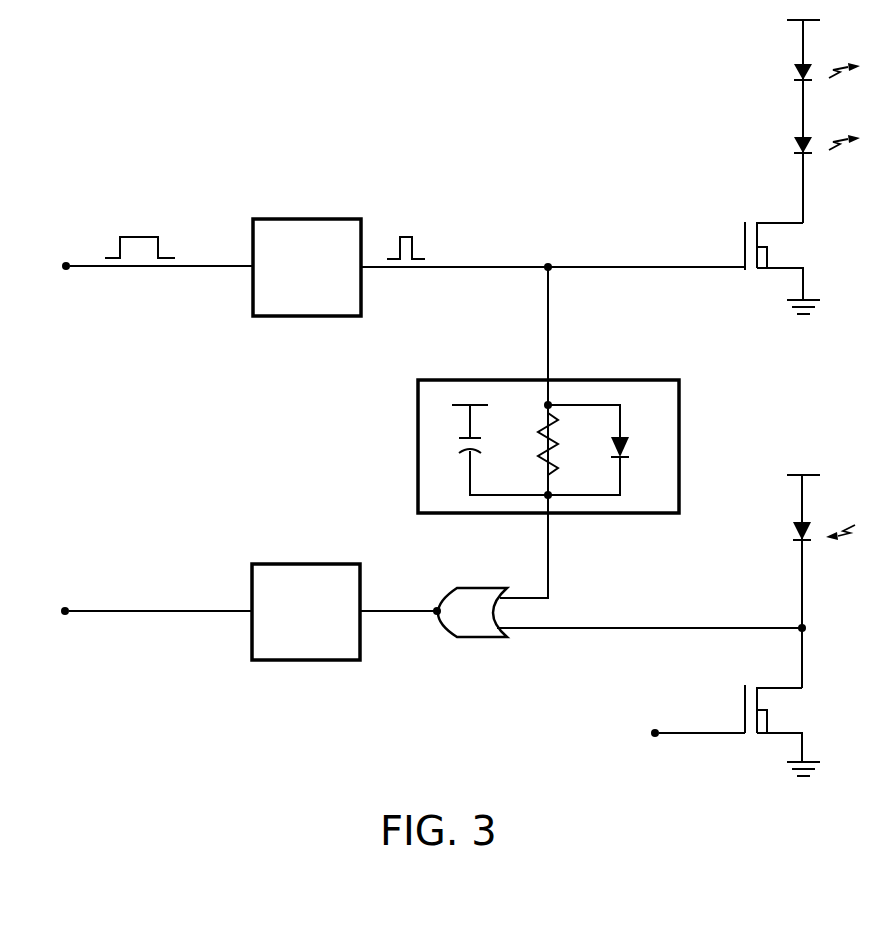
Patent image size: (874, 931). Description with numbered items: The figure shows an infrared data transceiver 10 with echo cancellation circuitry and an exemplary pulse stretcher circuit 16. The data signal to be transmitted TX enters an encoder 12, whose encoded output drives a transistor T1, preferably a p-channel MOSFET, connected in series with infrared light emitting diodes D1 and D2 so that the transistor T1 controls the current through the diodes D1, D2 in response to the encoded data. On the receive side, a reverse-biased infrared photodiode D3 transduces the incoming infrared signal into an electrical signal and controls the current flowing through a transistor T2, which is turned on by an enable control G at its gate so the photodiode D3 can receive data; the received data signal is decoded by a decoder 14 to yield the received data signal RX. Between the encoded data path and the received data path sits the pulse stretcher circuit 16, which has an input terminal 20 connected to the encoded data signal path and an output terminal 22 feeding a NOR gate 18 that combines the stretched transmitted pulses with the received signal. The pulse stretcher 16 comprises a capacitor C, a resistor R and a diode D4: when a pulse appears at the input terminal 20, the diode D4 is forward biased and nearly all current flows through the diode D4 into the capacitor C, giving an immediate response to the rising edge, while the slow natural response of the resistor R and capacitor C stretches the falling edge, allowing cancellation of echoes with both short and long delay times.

The infrared data transceiver system 10 is at (260, 700).
The encoder 12 is at (312, 218).
The decoder 14 is at (300, 563).
The pulse stretcher circuit 16 is at (508, 378).
The NOR gate 18 is at (487, 640).
The input terminal 20 is at (550, 354).
The output terminal 22 is at (548, 556).
The data signal to be transmitted TX is at (134, 259).
The received data signal RX is at (135, 612).
The enable control G is at (677, 735).
The capacitor C is at (488, 450).
The resistor R is at (532, 444).
The infrared light emitting diode D1 is at (800, 121).
The infrared light emitting diode D2 is at (800, 146).
The infrared photodiode D3 is at (797, 581).
The diode D4 is at (608, 450).
The transistor T1 is at (798, 268).
The transistor T2 is at (798, 730).